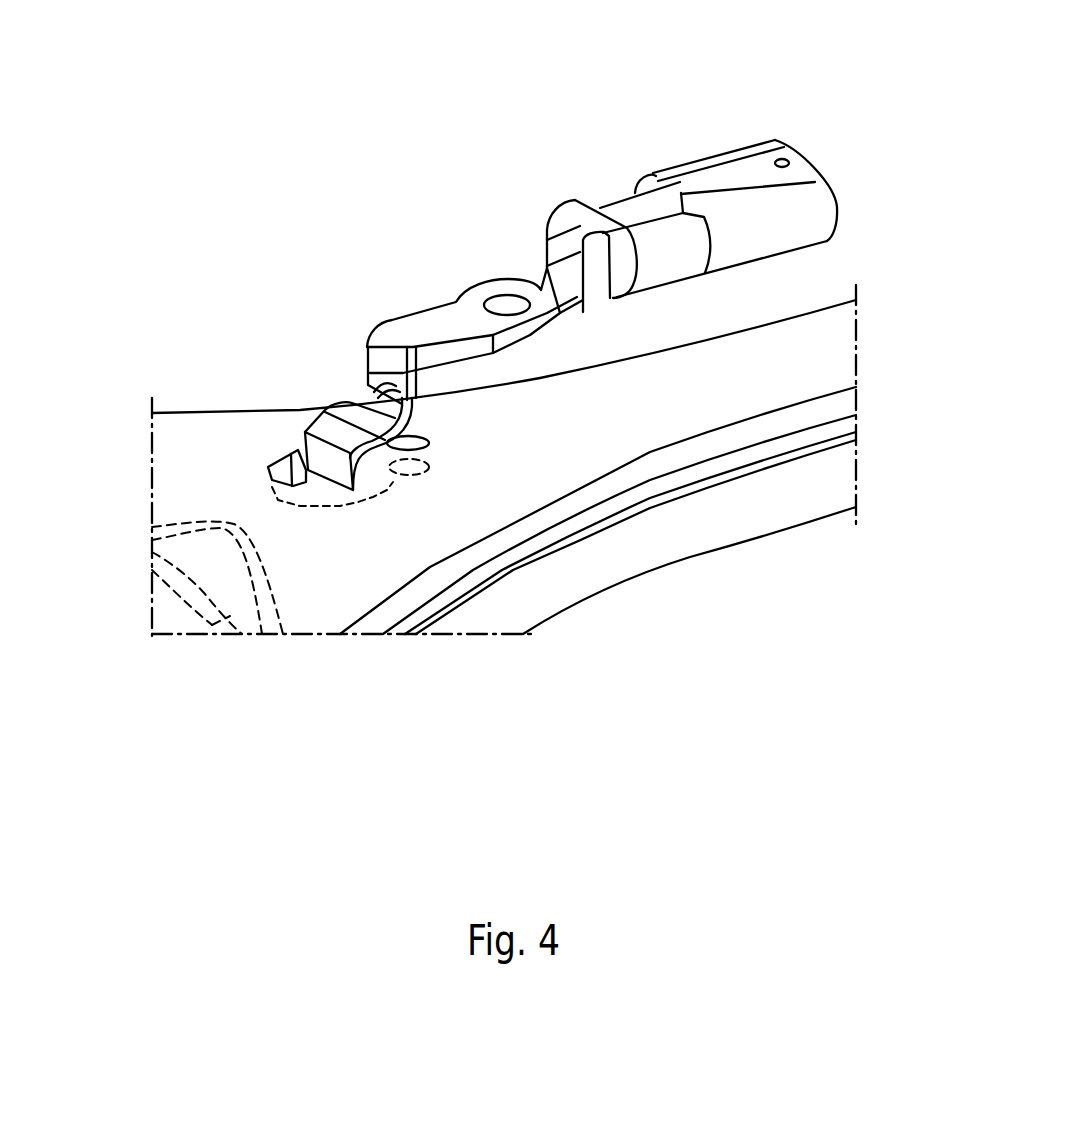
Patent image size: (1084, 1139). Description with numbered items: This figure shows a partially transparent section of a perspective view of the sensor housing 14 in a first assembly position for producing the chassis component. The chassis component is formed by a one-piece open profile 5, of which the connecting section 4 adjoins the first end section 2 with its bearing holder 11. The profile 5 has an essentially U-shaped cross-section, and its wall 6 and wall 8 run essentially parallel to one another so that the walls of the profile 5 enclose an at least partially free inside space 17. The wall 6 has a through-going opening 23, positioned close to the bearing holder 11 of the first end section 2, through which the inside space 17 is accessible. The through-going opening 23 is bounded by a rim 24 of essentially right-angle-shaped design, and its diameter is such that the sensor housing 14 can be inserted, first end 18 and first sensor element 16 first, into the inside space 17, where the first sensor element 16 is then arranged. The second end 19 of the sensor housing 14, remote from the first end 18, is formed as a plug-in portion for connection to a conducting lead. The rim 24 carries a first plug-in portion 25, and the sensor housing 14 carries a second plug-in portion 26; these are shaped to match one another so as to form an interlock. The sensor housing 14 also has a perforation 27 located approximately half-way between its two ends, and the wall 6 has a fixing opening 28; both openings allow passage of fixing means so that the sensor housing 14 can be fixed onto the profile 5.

The first end section 2 is at (135, 377).
The connecting section 4 is at (806, 560).
The profile 5 is at (567, 683).
The wall 6 is at (808, 337).
The wall 8 is at (822, 478).
The bearing holder 11 is at (170, 658).
The sensor housing 14 is at (565, 208).
The first sensor element 16 is at (305, 448).
The inside space 17 is at (585, 545).
The first end 18 is at (300, 383).
The second end 19 is at (716, 122).
The through-going opening 23 is at (389, 488).
The rim 24 is at (372, 470).
The first plug-in portion 25 is at (262, 481).
The second plug-in portion 26 is at (357, 360).
The perforation 27 is at (503, 303).
The fixing opening 28 is at (429, 448).